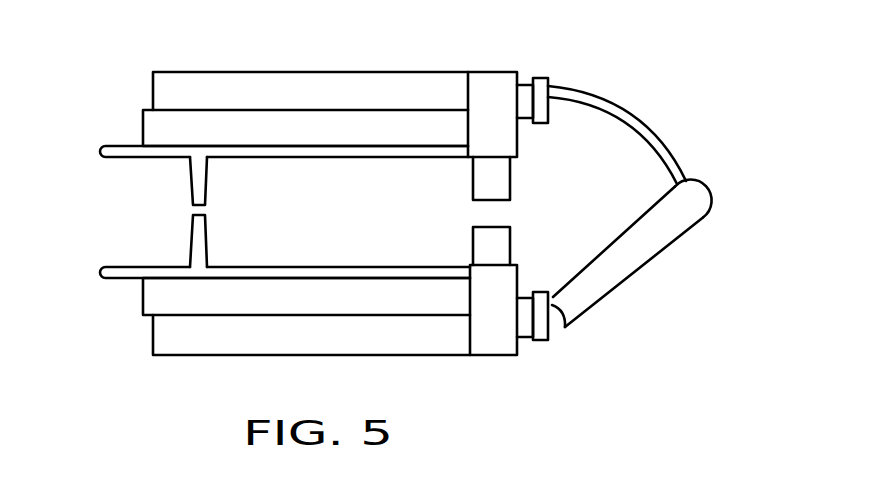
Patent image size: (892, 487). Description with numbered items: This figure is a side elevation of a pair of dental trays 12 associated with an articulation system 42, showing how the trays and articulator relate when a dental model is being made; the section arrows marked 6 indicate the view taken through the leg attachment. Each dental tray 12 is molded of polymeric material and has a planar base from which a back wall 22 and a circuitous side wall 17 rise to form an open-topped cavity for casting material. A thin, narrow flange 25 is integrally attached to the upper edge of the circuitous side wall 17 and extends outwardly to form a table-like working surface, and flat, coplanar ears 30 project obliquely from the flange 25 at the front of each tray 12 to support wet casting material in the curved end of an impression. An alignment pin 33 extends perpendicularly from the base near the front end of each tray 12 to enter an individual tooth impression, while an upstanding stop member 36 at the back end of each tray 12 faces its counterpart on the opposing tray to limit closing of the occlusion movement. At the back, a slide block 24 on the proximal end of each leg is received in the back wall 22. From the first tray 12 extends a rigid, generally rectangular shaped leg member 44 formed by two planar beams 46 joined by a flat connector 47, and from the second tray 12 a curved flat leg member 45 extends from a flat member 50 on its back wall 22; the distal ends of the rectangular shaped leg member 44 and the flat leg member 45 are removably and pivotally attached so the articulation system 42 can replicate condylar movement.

The dental tray 12 is at (288, 56).
The circuitous side wall 17 is at (165, 130).
The back wall 22 is at (487, 98).
The slide block 24 is at (528, 90).
The flange 25 is at (170, 160).
The ears 30 is at (125, 147).
The alignment pin 33 is at (197, 182).
The stop member 36 is at (478, 181).
The articulation system 42 is at (622, 95).
The rectangular shaped leg member 44 is at (618, 303).
The flat leg member 45 is at (648, 143).
The planar beams 46 is at (617, 257).
The connector 47 is at (556, 318).
The flat member 50 is at (550, 80).
The section line for FIG. 6 is at (723, 110).